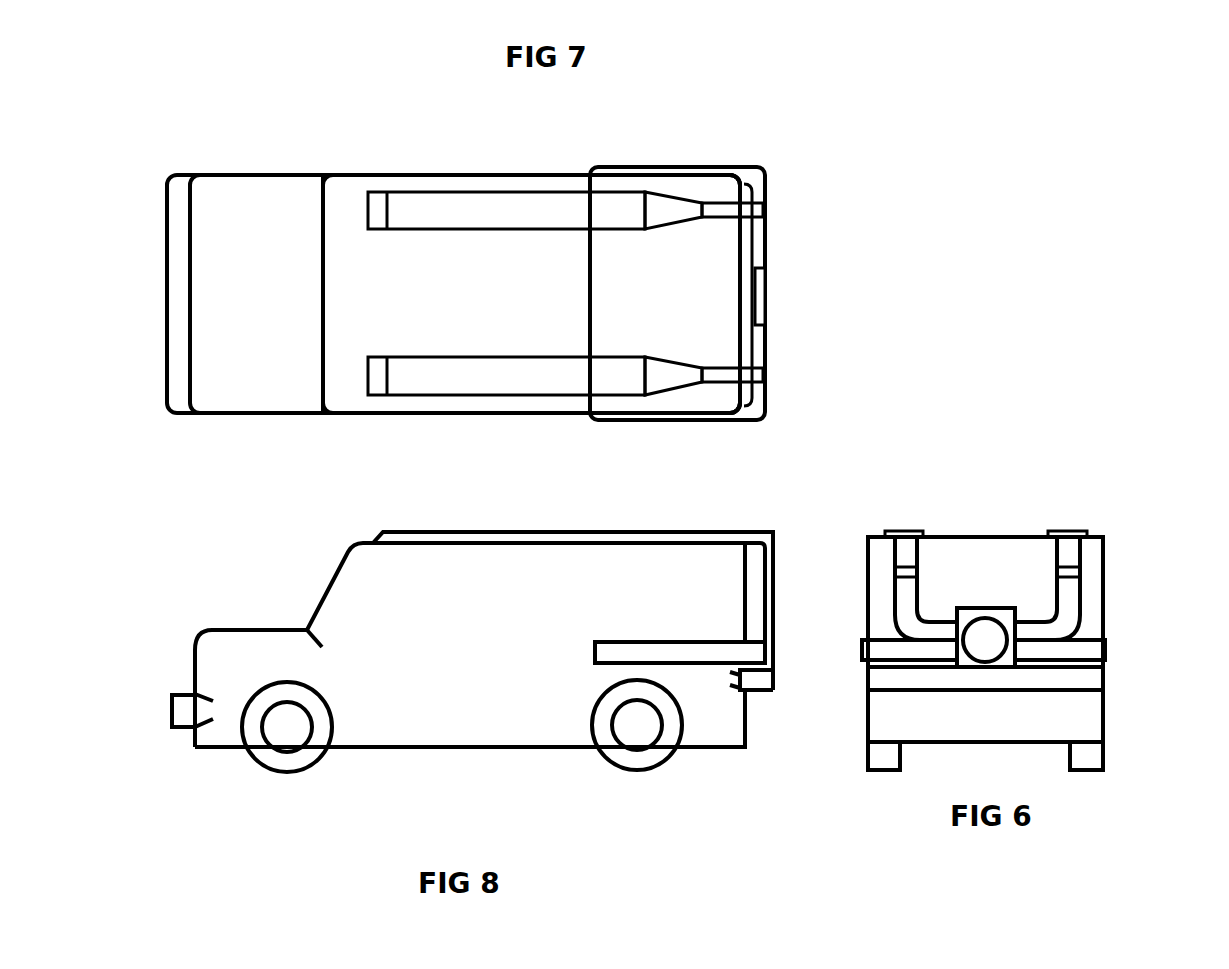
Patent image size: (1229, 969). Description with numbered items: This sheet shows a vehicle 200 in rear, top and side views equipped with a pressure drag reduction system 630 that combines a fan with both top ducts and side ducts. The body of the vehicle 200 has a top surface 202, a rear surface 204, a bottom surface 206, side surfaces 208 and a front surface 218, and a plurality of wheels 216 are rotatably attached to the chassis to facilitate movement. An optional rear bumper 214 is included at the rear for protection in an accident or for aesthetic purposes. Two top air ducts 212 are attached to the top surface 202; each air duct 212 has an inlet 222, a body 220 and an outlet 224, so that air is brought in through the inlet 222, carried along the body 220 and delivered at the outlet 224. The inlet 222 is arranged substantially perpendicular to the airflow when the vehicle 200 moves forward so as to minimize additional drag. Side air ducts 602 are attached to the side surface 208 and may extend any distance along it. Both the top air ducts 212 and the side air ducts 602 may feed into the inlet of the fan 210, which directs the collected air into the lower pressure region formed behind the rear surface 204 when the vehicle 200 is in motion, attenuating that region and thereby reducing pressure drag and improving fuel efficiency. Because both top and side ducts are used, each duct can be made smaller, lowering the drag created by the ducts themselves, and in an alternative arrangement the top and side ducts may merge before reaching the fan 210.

In FIG. 7, the vehicle 200 is at (313, 144).
In FIG. 8, the vehicle 200 is at (472, 645).
In FIG. 6, the vehicle 200 is at (1109, 507).
In FIG. 7, the top surface 202 is at (651, 300).
In FIG. 6, the top surface 202 is at (1013, 524).
In FIG. 7, the rear surface 204 is at (784, 233).
In FIG. 6, the rear surface 204 is at (1039, 577).
In FIG. 8, the bottom surface 206 is at (710, 758).
In FIG. 6, the bottom surface 206 is at (930, 755).
In FIG. 7, the side surfaces 208 is at (540, 419).
In FIG. 8, the side surfaces 208 is at (626, 573).
In FIG. 6, the side surfaces 208 is at (864, 580).
In FIG. 7, the fan 210 is at (786, 286).
In FIG. 8, the fan 210 is at (784, 650).
In FIG. 6, the fan 210 is at (979, 654).
In FIG. 7, the air ducts 212 is at (568, 243).
In FIG. 8, the air ducts 212 is at (427, 525).
In FIG. 6, the air ducts 212 is at (1074, 516).
In FIG. 6, the rear bumper 214 is at (1115, 672).
In FIG. 8, the wheels 216 is at (279, 742).
In FIG. 6, the wheels 216 is at (1111, 781).
In FIG. 7, the front surface 218 is at (160, 376).
In FIG. 8, the front surface 218 is at (184, 645).
In FIG. 7, the body 220 is at (440, 223).
In FIG. 7, the inlet 222 is at (357, 221).
In FIG. 6, the outlet 224 is at (1040, 613).
In FIG. 7, the side air ducts 602 is at (688, 154).
In FIG. 8, the side air ducts 602 is at (642, 659).
In FIG. 6, the side air ducts 602 is at (1112, 657).
In FIG. 7, the pressure drag reduction system 630 is at (798, 350).
In FIG. 8, the pressure drag reduction system 630 is at (672, 494).
In FIG. 6, the pressure drag reduction system 630 is at (893, 472).